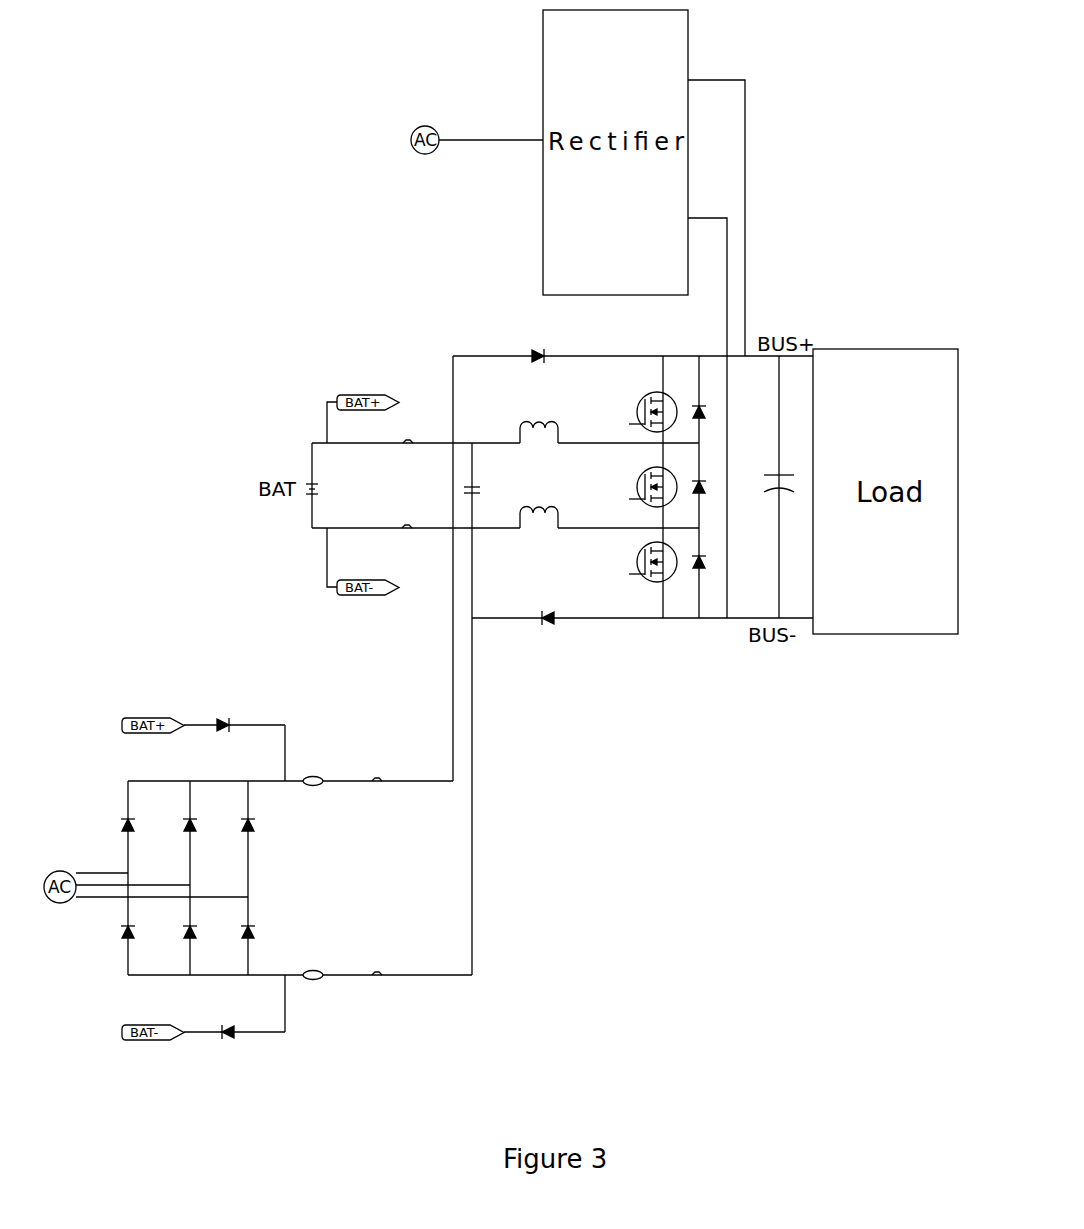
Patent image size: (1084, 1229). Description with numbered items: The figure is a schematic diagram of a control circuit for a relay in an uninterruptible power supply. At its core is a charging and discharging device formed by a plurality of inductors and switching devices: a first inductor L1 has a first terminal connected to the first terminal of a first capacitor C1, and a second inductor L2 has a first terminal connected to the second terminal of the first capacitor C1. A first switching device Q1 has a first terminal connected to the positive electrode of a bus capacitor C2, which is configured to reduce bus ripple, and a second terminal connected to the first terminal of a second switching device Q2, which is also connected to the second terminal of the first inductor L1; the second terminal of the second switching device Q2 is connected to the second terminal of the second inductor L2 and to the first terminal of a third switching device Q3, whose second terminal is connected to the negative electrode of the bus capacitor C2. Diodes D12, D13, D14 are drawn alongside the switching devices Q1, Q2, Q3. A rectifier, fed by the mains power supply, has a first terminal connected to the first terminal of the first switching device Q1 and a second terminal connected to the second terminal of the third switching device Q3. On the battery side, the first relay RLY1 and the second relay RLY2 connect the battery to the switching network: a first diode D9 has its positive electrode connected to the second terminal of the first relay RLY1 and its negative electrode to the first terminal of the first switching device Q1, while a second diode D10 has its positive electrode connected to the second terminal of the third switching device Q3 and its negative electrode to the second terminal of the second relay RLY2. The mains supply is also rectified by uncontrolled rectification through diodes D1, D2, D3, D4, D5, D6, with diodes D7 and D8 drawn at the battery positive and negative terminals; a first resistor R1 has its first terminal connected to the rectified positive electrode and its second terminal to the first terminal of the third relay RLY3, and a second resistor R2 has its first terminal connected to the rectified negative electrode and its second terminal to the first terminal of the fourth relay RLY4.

The diode D1 is at (144, 828).
The diode D2 is at (144, 935).
The diode D3 is at (205, 828).
The diode D4 is at (205, 935).
The diode D5 is at (263, 828).
The diode D6 is at (263, 935).
The diode D7 is at (222, 740).
The diode D8 is at (229, 1019).
The first diode D9 is at (539, 373).
The second diode D10 is at (548, 605).
The diode D12 is at (722, 411).
The diode D13 is at (717, 486).
The diode D14 is at (722, 561).
The first switching device Q1 is at (640, 412).
The second switching device Q2 is at (639, 487).
The third switching device Q3 is at (639, 562).
The first inductor L1 is at (523, 433).
The second inductor L2 is at (523, 519).
The first capacitor C1 is at (486, 492).
The bus capacitor C2 is at (769, 471).
The first resistor R1 is at (311, 797).
The second resistor R2 is at (311, 991).
The first relay RLY1 is at (403, 457).
The second relay RLY2 is at (404, 542).
The third relay RLY3 is at (382, 797).
The fourth relay RLY4 is at (382, 991).